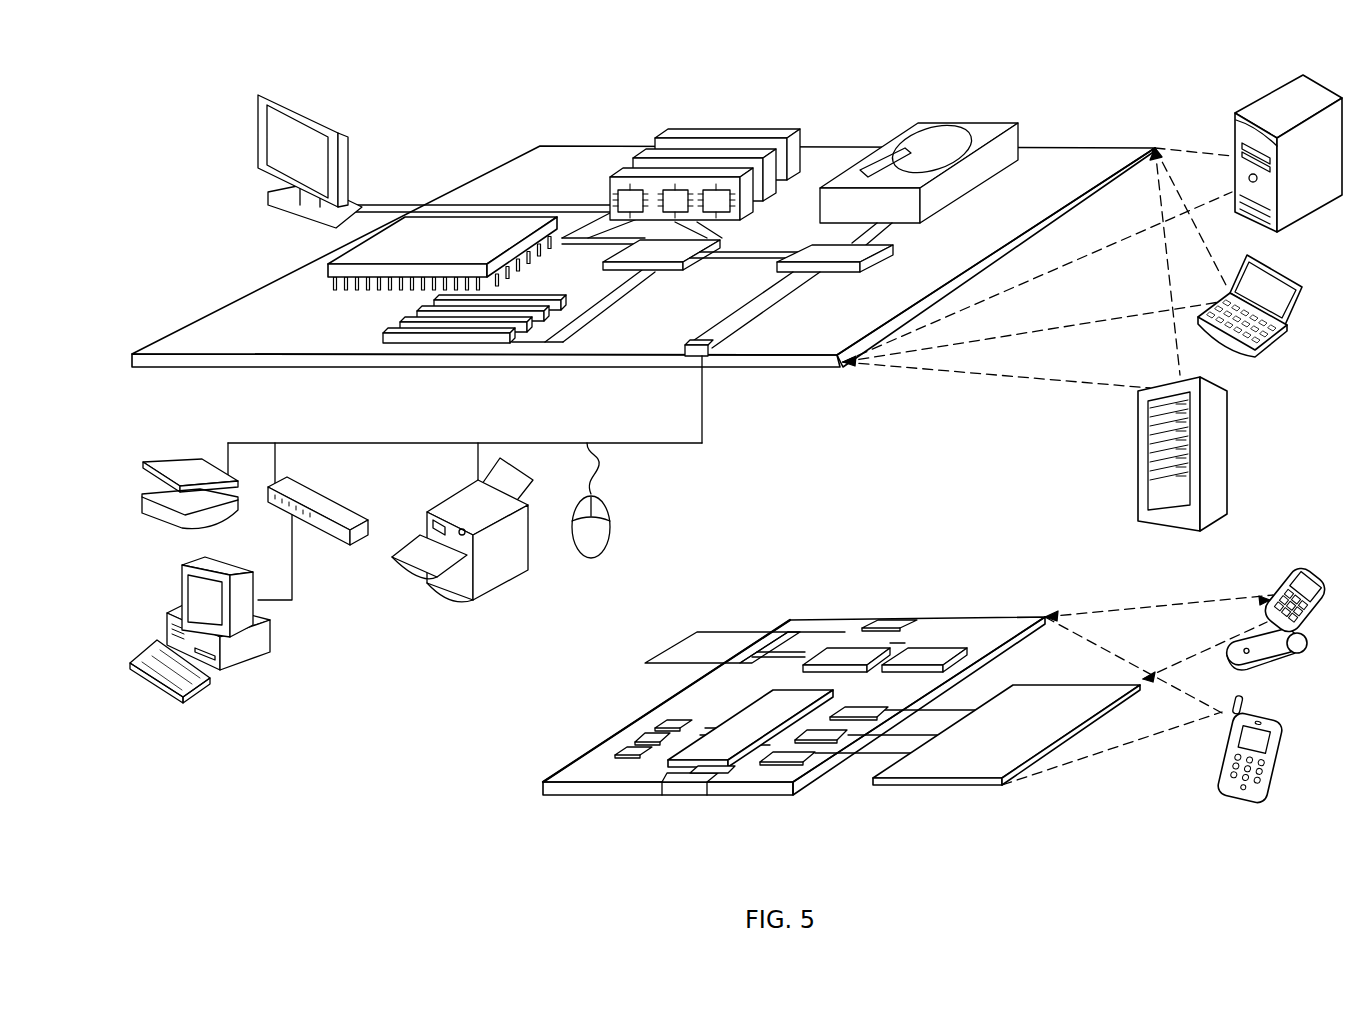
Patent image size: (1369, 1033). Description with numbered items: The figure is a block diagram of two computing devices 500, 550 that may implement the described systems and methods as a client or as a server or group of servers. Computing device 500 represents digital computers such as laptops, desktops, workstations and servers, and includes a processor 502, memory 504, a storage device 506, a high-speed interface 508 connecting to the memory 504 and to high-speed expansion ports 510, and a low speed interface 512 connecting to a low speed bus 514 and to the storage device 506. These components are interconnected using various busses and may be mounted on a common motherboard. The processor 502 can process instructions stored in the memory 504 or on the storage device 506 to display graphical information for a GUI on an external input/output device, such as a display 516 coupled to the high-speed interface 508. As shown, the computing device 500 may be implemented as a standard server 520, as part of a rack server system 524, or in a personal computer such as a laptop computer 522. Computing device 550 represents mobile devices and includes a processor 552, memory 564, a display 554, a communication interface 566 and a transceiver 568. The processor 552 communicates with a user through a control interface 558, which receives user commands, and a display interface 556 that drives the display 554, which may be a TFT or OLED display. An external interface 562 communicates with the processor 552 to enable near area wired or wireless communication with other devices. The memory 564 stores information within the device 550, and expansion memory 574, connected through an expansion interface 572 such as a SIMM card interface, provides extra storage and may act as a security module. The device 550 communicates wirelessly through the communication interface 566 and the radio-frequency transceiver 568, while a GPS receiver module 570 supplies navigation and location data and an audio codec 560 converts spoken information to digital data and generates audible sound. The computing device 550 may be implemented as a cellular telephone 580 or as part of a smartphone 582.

The computing device 500 is at (643, 220).
The processor 502 is at (396, 253).
The memory 504 is at (705, 171).
The storage device 506 is at (919, 169).
The high-speed interface 508 is at (627, 185).
The high-speed expansion ports 510 is at (427, 306).
The low speed interface 512 is at (834, 191).
The low speed bus 514 is at (752, 376).
The display 516 is at (285, 144).
The standard server 520 is at (1260, 153).
The laptop computer 522 is at (1276, 302).
The rack server system 524 is at (1155, 454).
The computing device 550 is at (746, 735).
The processor 552 is at (750, 762).
The display 554 is at (1006, 757).
The display interface 556 is at (806, 804).
The control interface 558 is at (845, 783).
The audio codec 560 is at (874, 761).
The external interface 562 is at (698, 811).
The memory 564 is at (634, 733).
The communication interface 566 is at (837, 634).
The transceiver 568 is at (930, 631).
The GPS receiver module 570 is at (884, 603).
The expansion interface 572 is at (778, 632).
The expansion memory 574 is at (715, 632).
The cellular telephone 580 is at (1277, 605).
The smartphone 582 is at (1222, 750).